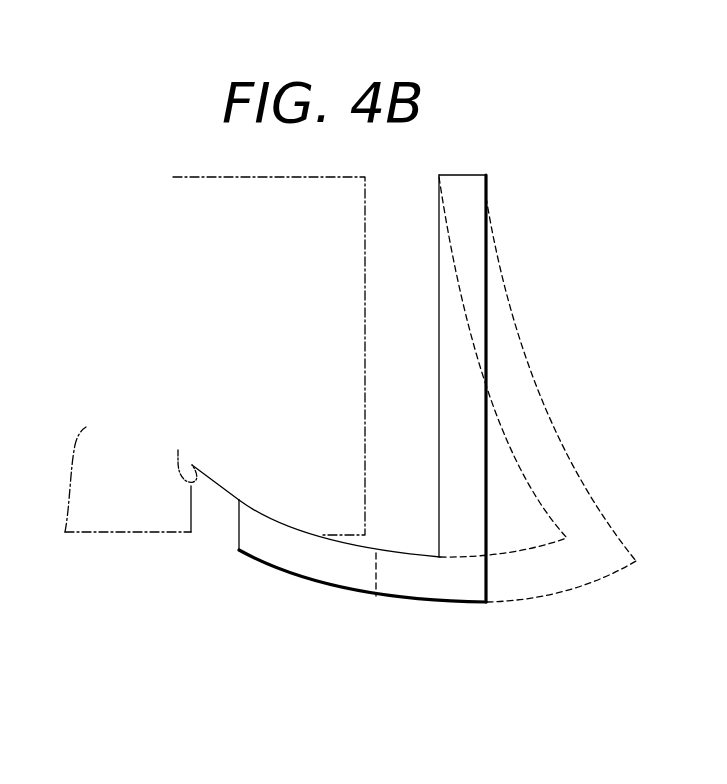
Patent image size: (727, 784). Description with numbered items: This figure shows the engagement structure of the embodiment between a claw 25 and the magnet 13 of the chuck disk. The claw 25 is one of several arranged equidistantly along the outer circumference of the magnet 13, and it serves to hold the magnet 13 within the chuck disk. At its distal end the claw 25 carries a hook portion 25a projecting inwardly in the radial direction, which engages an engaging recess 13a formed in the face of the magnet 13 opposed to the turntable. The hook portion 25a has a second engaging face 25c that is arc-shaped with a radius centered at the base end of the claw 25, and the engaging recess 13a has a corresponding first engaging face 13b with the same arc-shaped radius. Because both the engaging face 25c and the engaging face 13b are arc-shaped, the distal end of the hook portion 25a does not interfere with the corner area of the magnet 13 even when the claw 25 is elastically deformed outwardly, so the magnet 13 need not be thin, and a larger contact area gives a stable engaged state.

The magnet 13 is at (365, 235).
The engaging recess 13a is at (193, 515).
The first engaging face 13b is at (178, 450).
The claw 25 is at (473, 233).
The hook portion 25a is at (298, 560).
The second engaging face 25c is at (290, 522).